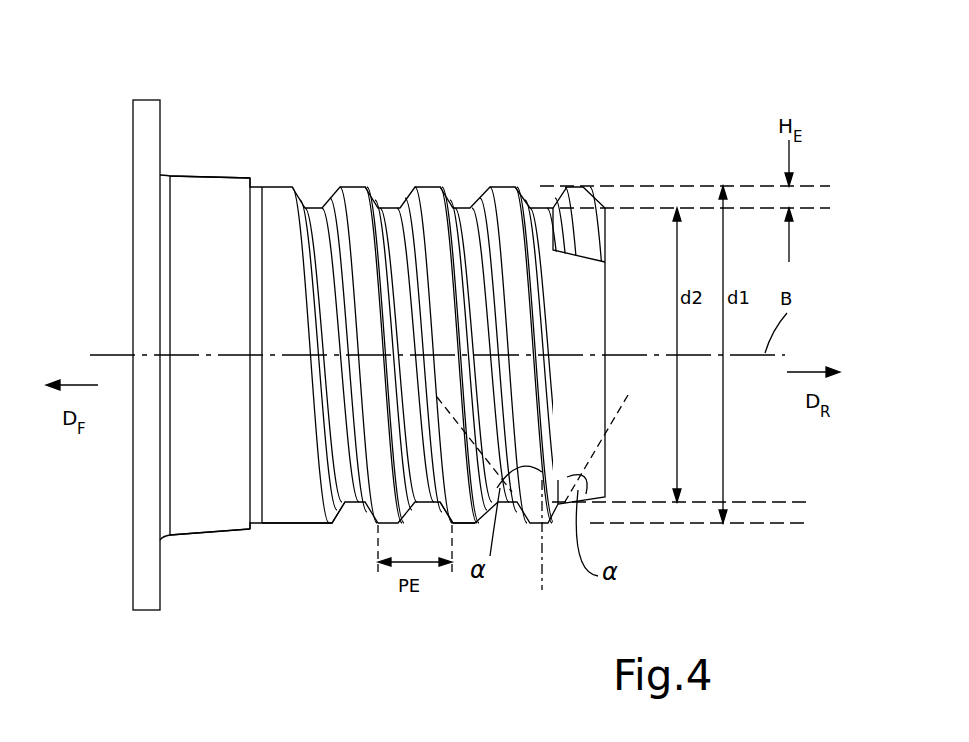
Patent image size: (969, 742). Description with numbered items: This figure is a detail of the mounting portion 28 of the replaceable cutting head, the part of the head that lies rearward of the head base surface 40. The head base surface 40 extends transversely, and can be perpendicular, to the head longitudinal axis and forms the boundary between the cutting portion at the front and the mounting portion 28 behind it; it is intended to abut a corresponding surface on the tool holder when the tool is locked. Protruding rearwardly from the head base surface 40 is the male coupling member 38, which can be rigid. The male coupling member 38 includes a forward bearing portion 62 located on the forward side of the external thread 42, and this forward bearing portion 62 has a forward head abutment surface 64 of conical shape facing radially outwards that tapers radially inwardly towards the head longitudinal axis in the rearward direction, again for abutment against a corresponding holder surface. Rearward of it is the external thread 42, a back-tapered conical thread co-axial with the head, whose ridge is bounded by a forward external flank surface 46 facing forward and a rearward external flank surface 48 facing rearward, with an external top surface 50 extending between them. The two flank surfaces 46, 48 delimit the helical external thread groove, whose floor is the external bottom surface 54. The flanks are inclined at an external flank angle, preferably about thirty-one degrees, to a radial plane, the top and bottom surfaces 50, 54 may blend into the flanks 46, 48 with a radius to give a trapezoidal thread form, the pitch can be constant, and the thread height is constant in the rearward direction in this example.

The mounting portion 28 is at (551, 125).
The head base surface 40 is at (162, 123).
The forward head abutment surface 64 is at (202, 175).
The forward bearing portion 62 is at (196, 565).
The male coupling member 38 is at (315, 562).
The external thread 42 is at (463, 584).
The forward external flank surface 46 is at (333, 200).
The rearward external flank surface 48 is at (385, 205).
The external top surface 50 is at (352, 186).
The external bottom surface 54 is at (404, 197).